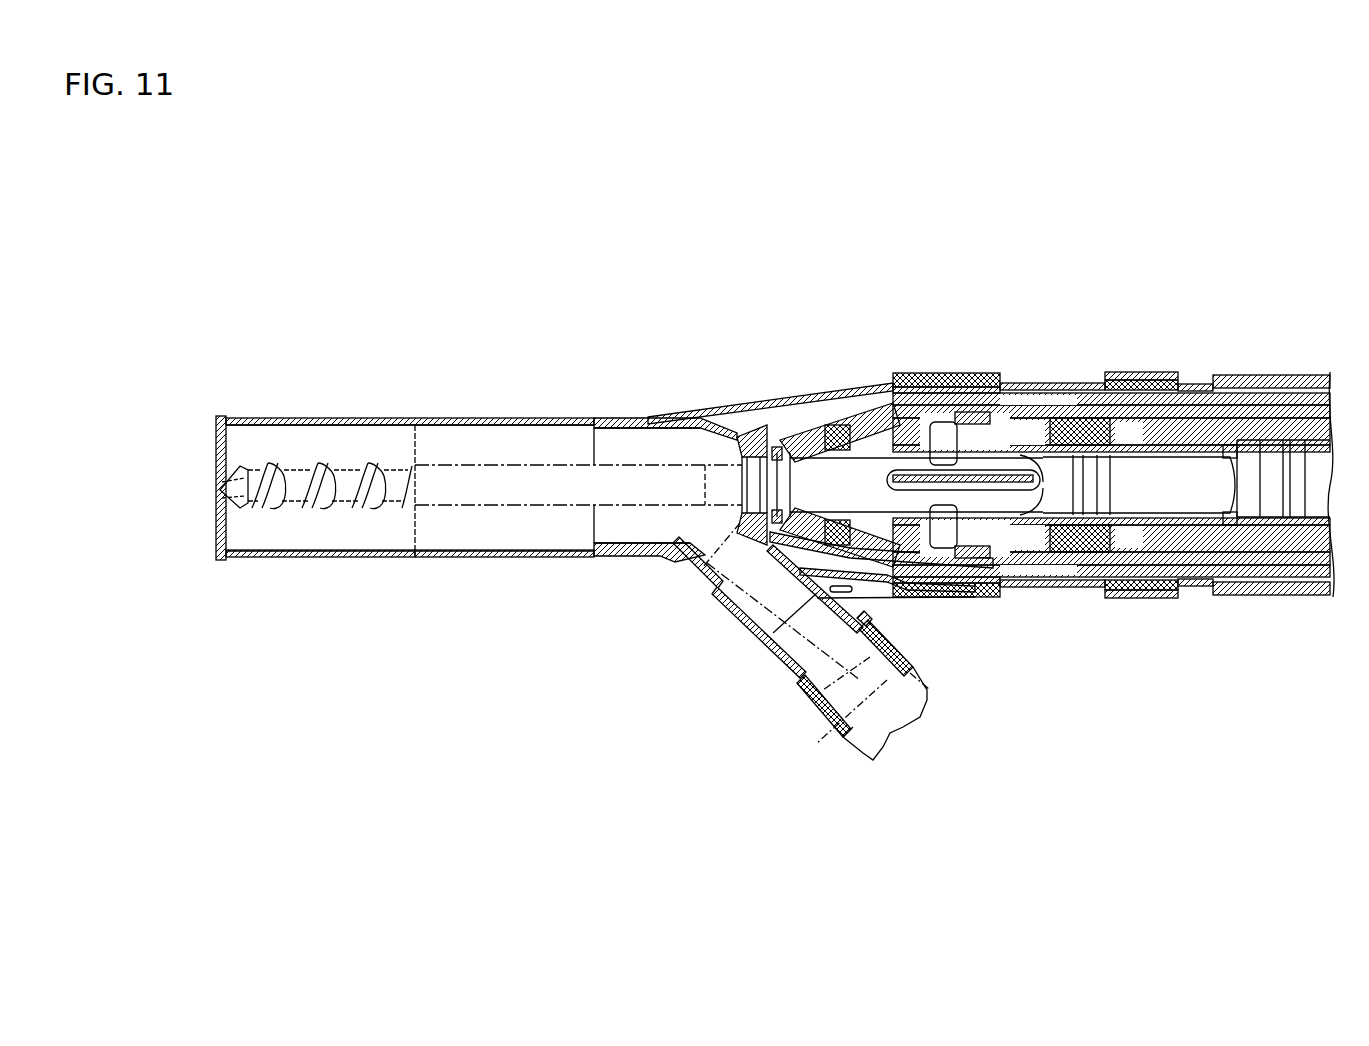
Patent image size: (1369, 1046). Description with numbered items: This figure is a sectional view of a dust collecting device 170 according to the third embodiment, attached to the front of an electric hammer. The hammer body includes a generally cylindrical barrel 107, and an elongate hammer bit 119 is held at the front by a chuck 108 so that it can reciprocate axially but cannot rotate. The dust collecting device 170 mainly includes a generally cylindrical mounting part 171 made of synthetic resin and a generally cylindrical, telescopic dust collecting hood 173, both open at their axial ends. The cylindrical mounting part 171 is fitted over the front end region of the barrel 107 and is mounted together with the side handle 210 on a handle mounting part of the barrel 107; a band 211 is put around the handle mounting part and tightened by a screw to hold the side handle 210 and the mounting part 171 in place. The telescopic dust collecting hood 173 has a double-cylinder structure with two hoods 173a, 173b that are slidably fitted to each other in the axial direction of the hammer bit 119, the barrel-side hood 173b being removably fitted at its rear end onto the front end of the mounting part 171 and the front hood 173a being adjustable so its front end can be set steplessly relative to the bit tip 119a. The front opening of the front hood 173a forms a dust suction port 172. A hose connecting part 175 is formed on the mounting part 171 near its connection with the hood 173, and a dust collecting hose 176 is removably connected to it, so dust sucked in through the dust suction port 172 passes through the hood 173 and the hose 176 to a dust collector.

The barrel 107 is at (1254, 367).
The chuck 108 is at (890, 410).
The hammer bit 119 is at (524, 480).
The bit tip 119a is at (268, 462).
The dust collecting device 170 is at (685, 372).
The cylindrical mounting part 171 is at (795, 395).
The dust suction port 172 is at (237, 457).
The telescopic dust collecting hood 173 is at (413, 412).
The front hood 173a is at (293, 558).
The barrel-side hood 173b is at (498, 556).
The hose connecting part 175 is at (752, 632).
The dust collecting hose 176 is at (817, 743).
The side handle 210 is at (1115, 362).
The band 211 is at (1153, 378).